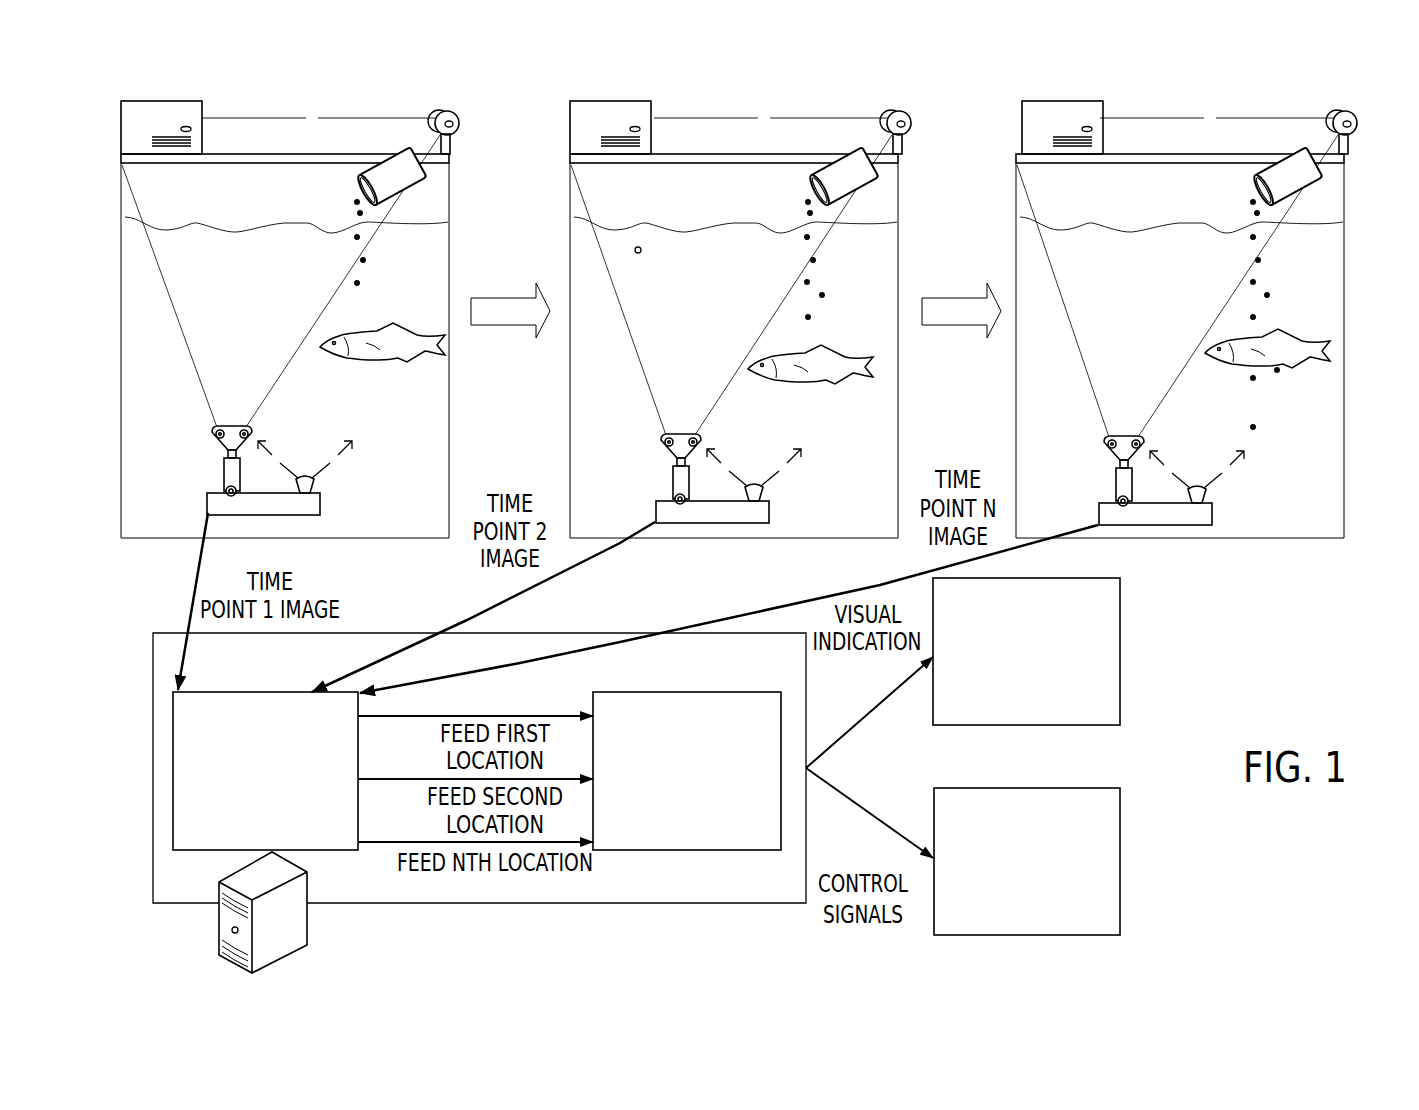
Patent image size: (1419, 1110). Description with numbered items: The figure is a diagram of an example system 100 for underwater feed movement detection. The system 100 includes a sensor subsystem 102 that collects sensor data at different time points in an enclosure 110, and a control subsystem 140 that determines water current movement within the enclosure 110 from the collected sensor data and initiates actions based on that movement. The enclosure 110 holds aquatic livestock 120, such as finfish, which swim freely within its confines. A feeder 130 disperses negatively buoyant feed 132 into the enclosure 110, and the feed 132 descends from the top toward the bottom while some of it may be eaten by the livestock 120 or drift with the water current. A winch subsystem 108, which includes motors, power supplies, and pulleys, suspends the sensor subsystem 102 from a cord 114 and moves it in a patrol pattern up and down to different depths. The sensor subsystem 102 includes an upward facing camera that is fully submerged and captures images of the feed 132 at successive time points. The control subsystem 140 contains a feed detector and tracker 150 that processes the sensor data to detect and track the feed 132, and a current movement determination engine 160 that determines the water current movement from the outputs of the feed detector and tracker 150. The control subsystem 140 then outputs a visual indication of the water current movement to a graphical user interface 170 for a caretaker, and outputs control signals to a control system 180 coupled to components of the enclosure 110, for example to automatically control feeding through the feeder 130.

The system 100 is at (233, 97).
The sensor subsystem 102 is at (1208, 568).
The winch subsystem 108 is at (612, 127).
The enclosure 110 is at (1345, 191).
The cord 114 is at (1205, 118).
The livestock 120 is at (1283, 330).
The feeder 130 is at (1303, 158).
The feed 132 is at (1252, 427).
The control subsystem 140 is at (307, 925).
The feed detector and tracker 150 is at (249, 810).
The current movement determination engine 160 is at (672, 838).
The graphical user interface 170 is at (1014, 688).
The control system 180 is at (1013, 900).